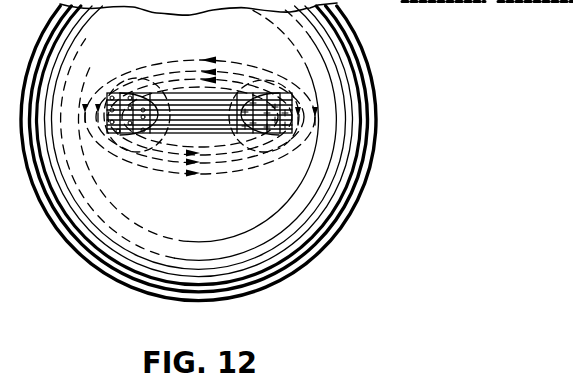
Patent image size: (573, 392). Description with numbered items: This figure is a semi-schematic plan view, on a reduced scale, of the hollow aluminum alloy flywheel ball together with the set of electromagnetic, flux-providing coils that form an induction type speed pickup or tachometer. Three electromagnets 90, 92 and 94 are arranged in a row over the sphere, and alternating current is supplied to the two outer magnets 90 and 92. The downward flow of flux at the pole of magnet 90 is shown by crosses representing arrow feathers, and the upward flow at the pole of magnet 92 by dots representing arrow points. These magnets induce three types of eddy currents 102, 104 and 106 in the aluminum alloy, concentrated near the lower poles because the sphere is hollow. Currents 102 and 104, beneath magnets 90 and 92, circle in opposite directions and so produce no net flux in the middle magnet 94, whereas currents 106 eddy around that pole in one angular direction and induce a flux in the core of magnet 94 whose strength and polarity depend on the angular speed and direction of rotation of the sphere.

The electromagnet 90 is at (292, 118).
The electromagnet 92 is at (107, 113).
The electromagnet 94 is at (145, 94).
The eddy currents 102 is at (297, 80).
The eddy currents 104 is at (93, 87).
The eddy currents 106 is at (181, 63).